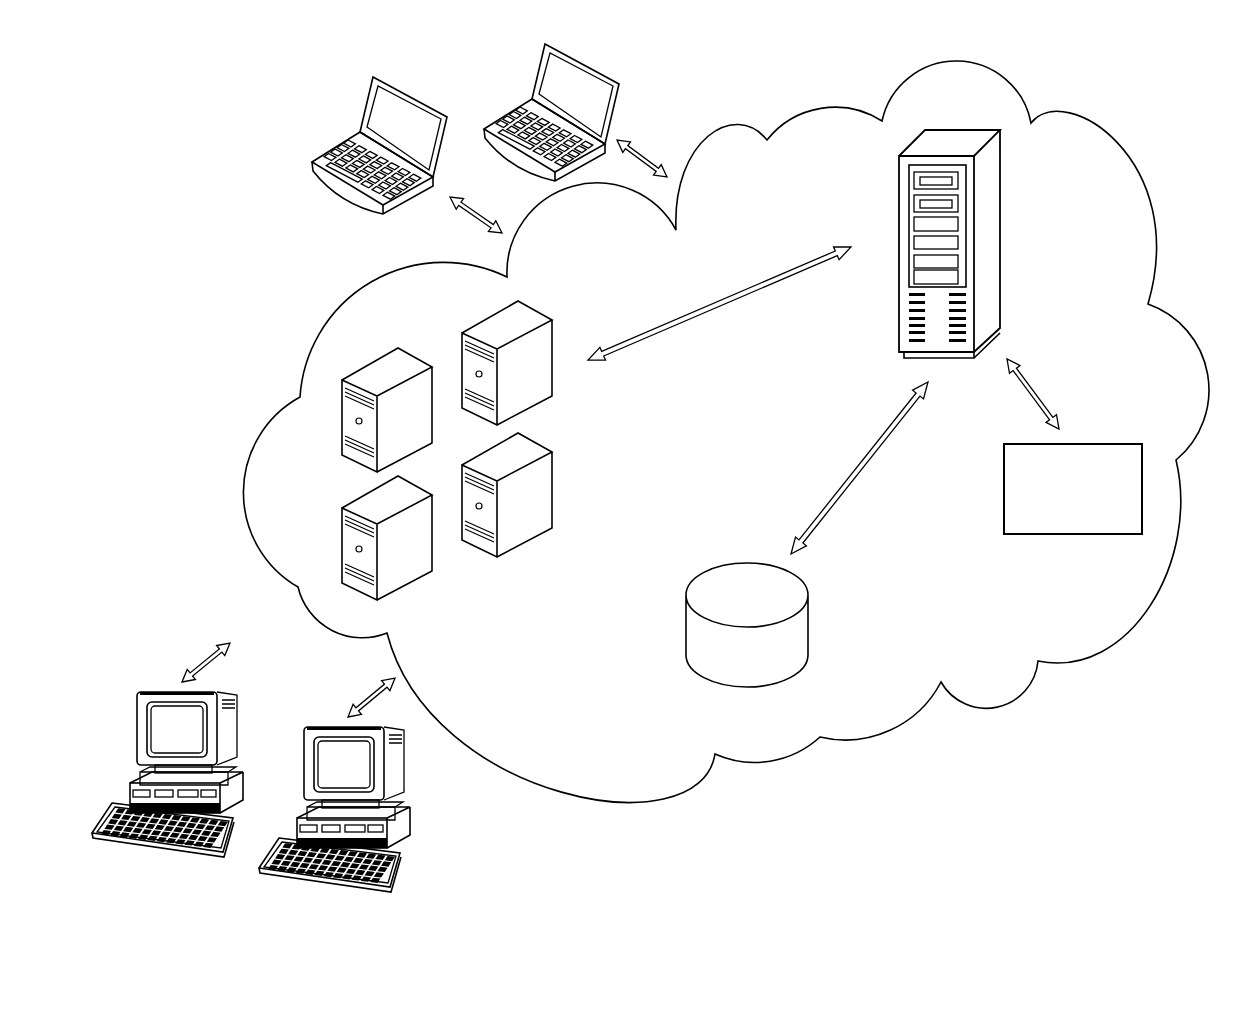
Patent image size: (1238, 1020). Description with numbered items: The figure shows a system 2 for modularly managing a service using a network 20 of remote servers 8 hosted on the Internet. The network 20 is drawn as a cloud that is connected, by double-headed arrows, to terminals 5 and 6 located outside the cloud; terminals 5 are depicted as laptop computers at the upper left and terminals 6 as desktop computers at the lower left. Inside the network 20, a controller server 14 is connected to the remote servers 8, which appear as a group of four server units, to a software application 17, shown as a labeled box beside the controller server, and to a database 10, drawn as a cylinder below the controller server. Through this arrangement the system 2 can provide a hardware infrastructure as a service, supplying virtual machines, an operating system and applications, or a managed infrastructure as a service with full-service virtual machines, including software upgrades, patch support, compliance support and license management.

The system 2 is at (182, 107).
The terminal 5 is at (463, 113).
The terminal 6 is at (262, 830).
The remote servers 8 is at (493, 603).
The database 10 is at (733, 617).
The controller server 14 is at (994, 239).
The software application 17 is at (1061, 528).
The network 20 is at (699, 469).